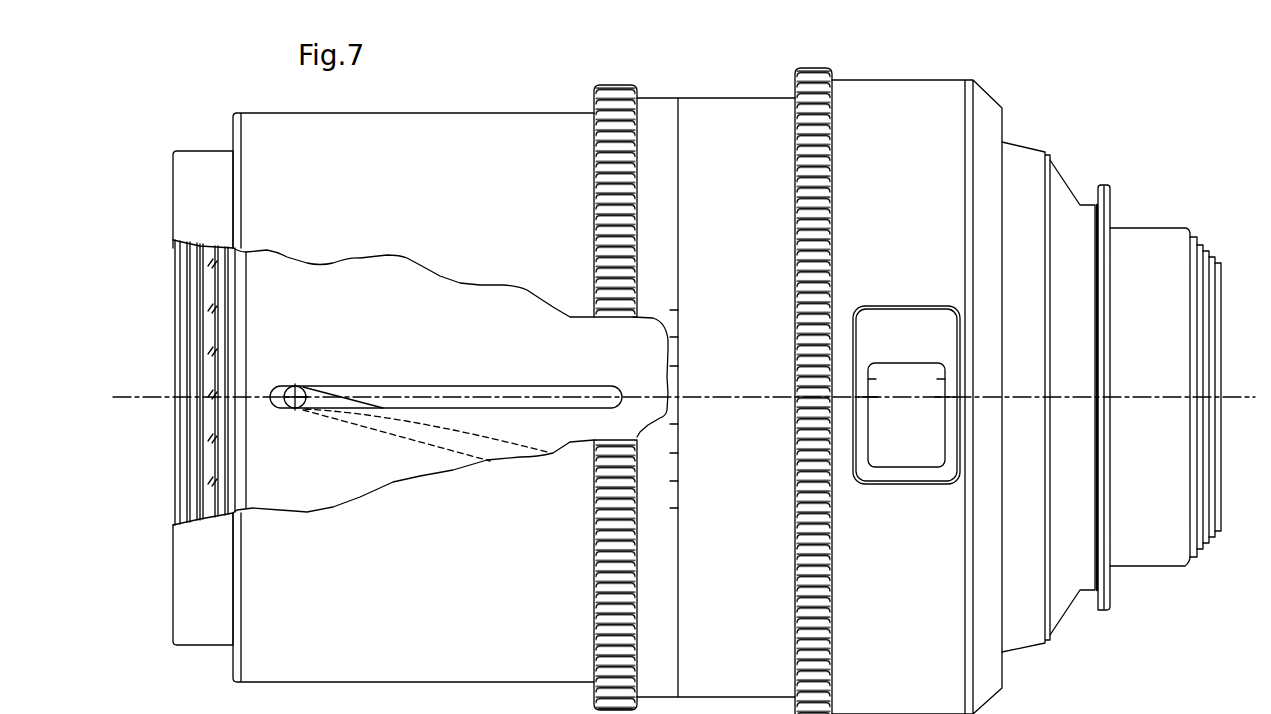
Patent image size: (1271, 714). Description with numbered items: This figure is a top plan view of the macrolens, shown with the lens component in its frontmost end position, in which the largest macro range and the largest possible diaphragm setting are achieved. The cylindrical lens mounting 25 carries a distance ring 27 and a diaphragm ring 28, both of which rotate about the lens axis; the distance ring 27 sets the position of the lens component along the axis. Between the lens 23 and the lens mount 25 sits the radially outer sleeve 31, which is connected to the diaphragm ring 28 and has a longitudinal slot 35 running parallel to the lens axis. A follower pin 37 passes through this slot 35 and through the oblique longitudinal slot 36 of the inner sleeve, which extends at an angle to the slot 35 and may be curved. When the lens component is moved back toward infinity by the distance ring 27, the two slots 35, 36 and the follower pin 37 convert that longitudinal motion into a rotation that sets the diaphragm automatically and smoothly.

The lens 23 is at (1132, 182).
The cylindrical lens mounting 25 is at (476, 126).
The distance ring 27 is at (904, 163).
The diaphragm ring 28 is at (670, 156).
The radially outer sleeve 31 is at (312, 488).
The longitudinal slot 35 is at (468, 392).
The longitudinal slot 36 is at (397, 426).
The follower pin 37 is at (301, 386).